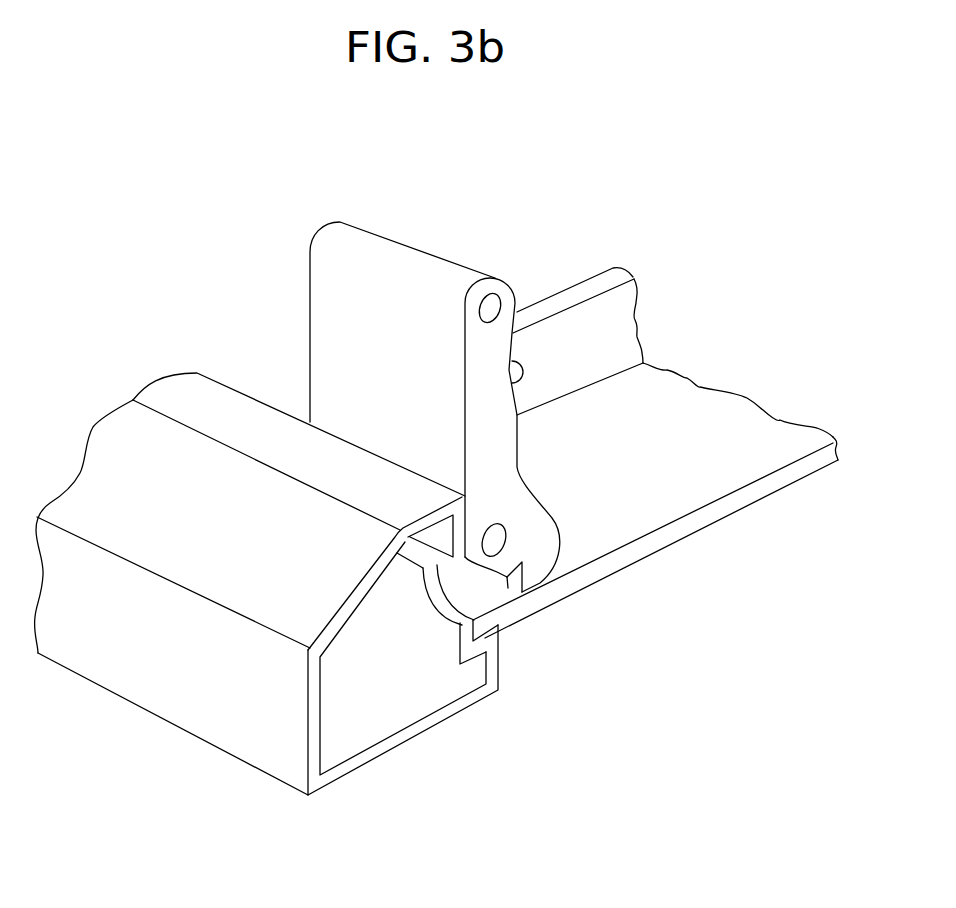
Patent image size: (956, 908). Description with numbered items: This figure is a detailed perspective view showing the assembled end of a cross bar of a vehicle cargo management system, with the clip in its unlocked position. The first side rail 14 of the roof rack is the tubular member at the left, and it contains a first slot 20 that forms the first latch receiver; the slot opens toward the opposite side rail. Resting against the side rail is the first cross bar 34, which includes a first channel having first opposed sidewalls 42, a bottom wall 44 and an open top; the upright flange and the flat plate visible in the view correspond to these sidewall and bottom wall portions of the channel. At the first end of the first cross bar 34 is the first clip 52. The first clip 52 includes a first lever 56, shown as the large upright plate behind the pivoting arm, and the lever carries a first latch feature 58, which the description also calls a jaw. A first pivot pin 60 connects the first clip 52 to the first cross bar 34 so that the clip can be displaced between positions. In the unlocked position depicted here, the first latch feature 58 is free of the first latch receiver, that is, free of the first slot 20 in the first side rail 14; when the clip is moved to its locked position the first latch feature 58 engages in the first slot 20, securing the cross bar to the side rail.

The first side rail 14 is at (183, 682).
The first slot 20 is at (453, 563).
The first cross bar 34 is at (706, 523).
The first opposed sidewalls 42 is at (602, 333).
The bottom wall 44 is at (727, 438).
The first clip 52 is at (513, 256).
The first lever 56 is at (343, 352).
The first latch feature 58 is at (510, 582).
The first pivot pin 60 is at (500, 542).